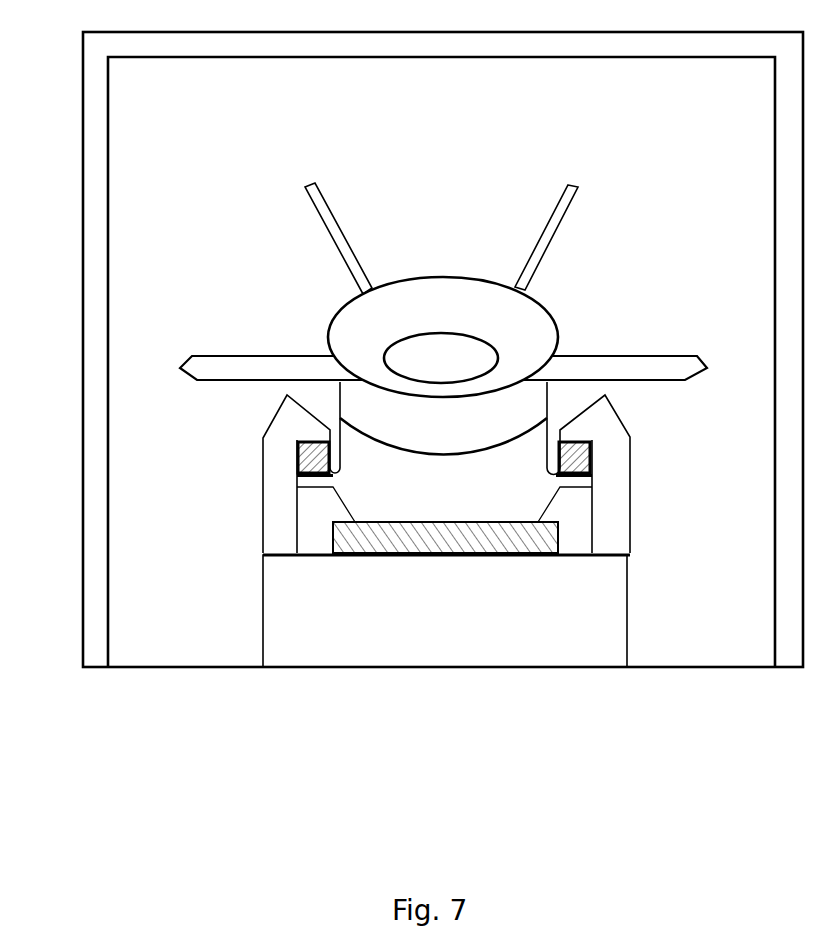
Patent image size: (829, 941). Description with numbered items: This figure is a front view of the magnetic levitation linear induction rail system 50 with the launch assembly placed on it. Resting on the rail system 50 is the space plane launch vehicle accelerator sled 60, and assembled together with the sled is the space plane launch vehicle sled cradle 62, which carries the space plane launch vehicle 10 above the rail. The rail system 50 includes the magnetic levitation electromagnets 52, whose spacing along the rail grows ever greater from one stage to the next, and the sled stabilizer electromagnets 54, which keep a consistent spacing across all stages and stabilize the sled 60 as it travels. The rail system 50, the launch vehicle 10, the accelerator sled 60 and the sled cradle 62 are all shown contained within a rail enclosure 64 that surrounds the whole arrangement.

The space plane launch vehicle 10 is at (512, 310).
The magnetic levitation linear induction rail system 50 is at (350, 639).
The magnetic levitation electromagnets 52 is at (523, 537).
The sled stabilizer electromagnets 54 is at (295, 457).
The space plane launch vehicle accelerator sled 60 is at (397, 492).
The space plane launch vehicle sled cradle 62 is at (523, 400).
The rail enclosure 64 is at (83, 597).